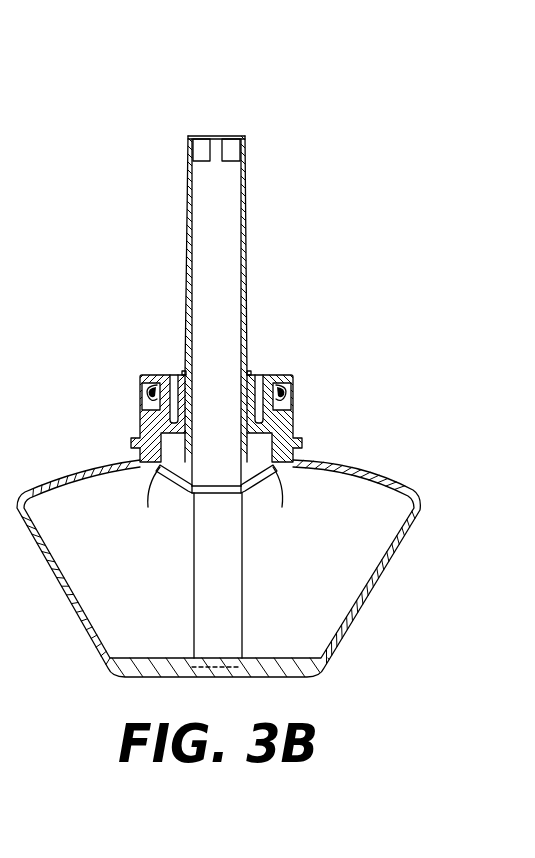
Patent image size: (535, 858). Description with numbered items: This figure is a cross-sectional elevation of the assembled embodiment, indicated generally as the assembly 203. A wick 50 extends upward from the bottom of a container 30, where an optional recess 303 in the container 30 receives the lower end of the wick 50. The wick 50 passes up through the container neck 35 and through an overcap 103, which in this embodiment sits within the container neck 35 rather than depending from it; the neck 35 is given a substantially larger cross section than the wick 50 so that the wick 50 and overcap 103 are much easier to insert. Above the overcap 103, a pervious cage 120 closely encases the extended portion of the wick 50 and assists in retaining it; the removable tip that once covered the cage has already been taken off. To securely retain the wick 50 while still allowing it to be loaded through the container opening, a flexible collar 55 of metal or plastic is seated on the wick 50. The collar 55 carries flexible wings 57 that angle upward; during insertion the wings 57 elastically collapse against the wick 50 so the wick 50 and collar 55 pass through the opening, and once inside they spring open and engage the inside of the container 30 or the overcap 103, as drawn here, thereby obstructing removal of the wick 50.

The system 203 is at (128, 216).
The pervious cage 120 is at (233, 135).
The overcap 103 is at (259, 252).
The container neck 35 is at (141, 436).
The container 30 is at (105, 463).
The flexible collar 55 is at (172, 486).
The flexible wings 57 is at (283, 492).
The wick 50 is at (194, 578).
The recess 303 is at (210, 677).